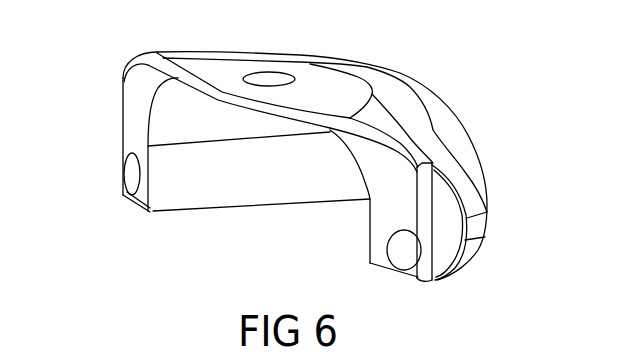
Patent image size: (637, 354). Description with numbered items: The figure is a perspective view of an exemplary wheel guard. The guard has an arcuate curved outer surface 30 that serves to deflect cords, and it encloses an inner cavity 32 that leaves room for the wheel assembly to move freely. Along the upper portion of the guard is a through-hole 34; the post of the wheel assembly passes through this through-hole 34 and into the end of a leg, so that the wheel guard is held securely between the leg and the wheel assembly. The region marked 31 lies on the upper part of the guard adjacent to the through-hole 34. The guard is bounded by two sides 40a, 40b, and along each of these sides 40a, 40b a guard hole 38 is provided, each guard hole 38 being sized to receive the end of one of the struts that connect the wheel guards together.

The arcuate curved outer surface 30 is at (400, 95).
The top surface of band 31 is at (322, 78).
The inner cavity 32 is at (248, 122).
The through-hole 34 is at (263, 78).
The guard hole 38 is at (133, 172).
The side 40a is at (135, 127).
The side 40b is at (400, 210).